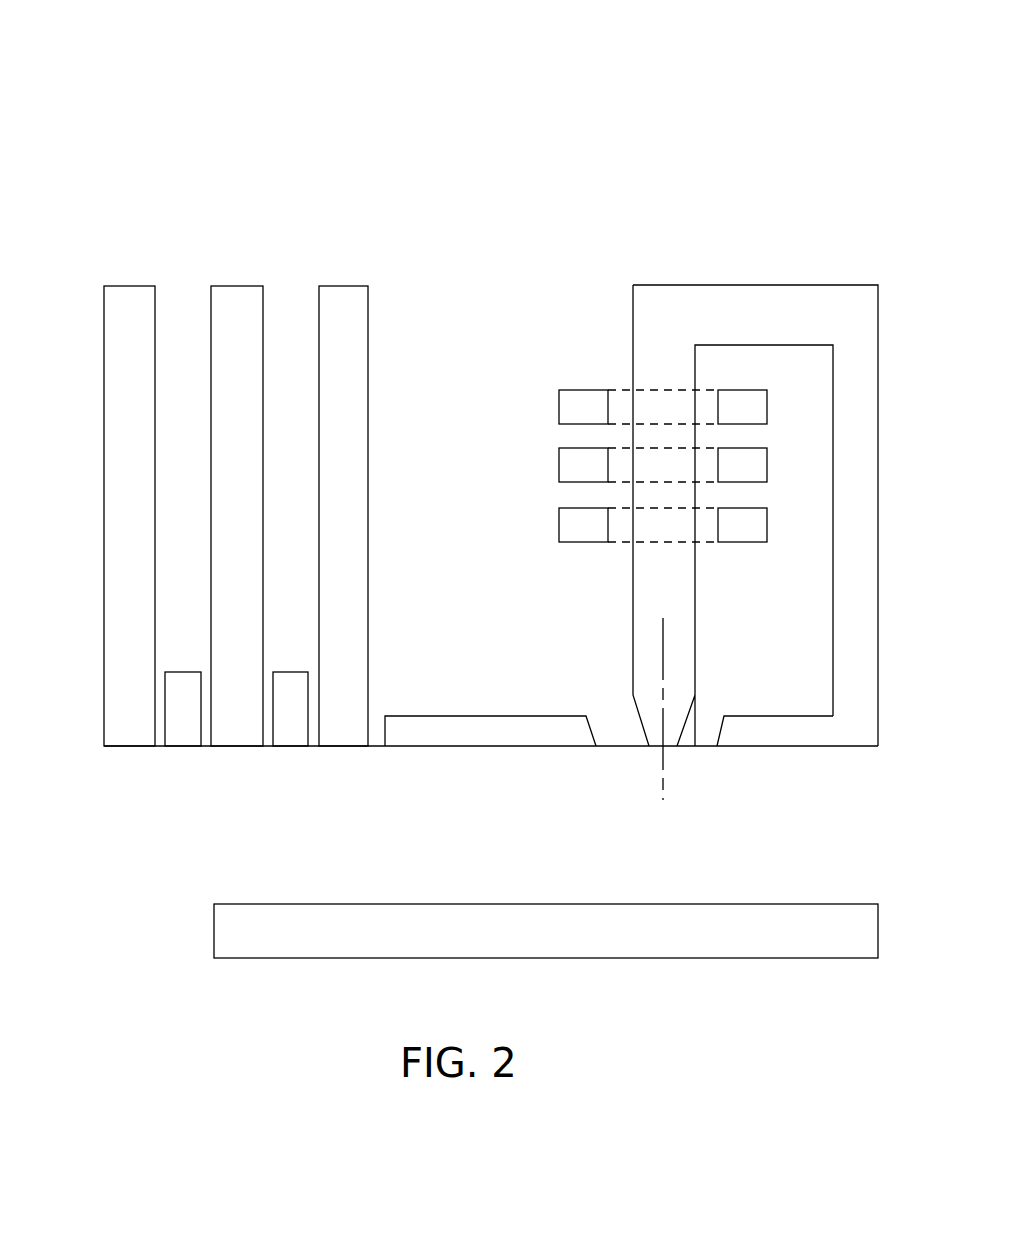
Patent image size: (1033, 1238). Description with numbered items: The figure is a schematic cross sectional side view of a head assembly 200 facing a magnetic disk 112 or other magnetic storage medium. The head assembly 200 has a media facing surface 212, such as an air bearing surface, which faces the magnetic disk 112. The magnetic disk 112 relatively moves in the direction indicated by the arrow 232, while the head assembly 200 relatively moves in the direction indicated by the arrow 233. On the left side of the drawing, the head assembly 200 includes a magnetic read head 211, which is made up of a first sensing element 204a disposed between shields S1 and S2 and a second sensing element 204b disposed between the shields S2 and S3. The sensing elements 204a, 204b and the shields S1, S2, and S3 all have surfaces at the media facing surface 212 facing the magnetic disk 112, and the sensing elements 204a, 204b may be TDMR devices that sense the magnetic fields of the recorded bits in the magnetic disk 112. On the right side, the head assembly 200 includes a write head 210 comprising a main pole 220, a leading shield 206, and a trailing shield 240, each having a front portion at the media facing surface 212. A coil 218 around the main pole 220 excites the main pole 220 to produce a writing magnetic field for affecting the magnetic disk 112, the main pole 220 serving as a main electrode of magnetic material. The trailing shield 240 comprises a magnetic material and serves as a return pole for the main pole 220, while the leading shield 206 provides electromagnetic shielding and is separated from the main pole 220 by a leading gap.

The head assembly 200 is at (145, 85).
The magnetic read head 211 is at (345, 262).
The shield S1 is at (124, 735).
The shield S2 is at (236, 735).
The shield S3 is at (344, 735).
The first sensing element 204a is at (185, 738).
The second sensing element 204b is at (288, 738).
The write head 210 is at (883, 232).
The leading shield 206 is at (437, 747).
The coil 218 is at (578, 543).
The main pole 220 is at (677, 578).
The media facing surface 212 is at (753, 748).
The trailing shield 240 is at (850, 735).
The arrow 233 is at (65, 422).
The arrow 232 is at (818, 882).
The magnetic disk 112 is at (807, 958).